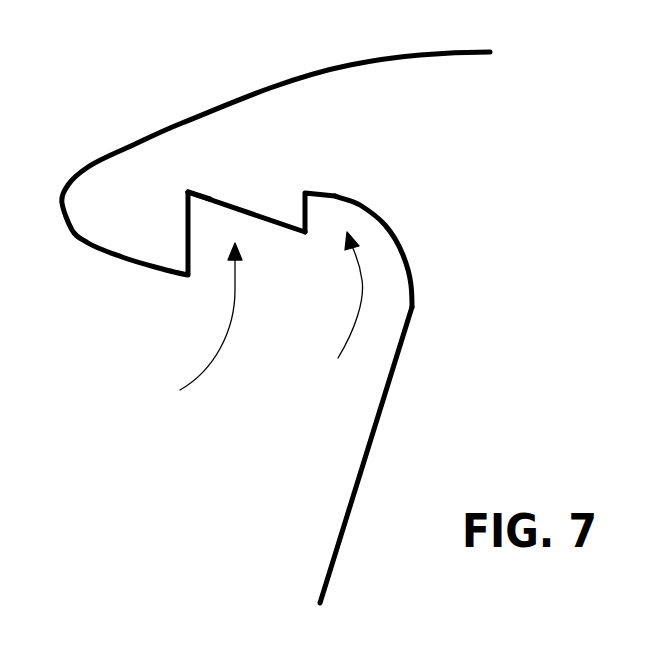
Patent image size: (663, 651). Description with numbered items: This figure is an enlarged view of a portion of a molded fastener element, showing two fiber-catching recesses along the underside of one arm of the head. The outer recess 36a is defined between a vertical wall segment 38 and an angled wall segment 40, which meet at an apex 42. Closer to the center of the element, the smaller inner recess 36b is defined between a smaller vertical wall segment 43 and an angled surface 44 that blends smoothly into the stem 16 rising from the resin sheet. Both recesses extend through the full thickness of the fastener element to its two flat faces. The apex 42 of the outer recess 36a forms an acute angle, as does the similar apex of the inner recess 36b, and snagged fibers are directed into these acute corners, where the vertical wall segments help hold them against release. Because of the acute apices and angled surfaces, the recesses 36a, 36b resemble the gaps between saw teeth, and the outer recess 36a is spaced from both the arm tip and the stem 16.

The stem 16 is at (367, 452).
The vertical wall segment 38 is at (190, 253).
The angled wall segment 40 is at (288, 232).
The apex 42 is at (188, 192).
The smaller vertical wall segment 43 is at (308, 212).
The angled surface 44 is at (393, 238).
The outer recess 36a is at (188, 329).
The inner recess 36b is at (334, 314).